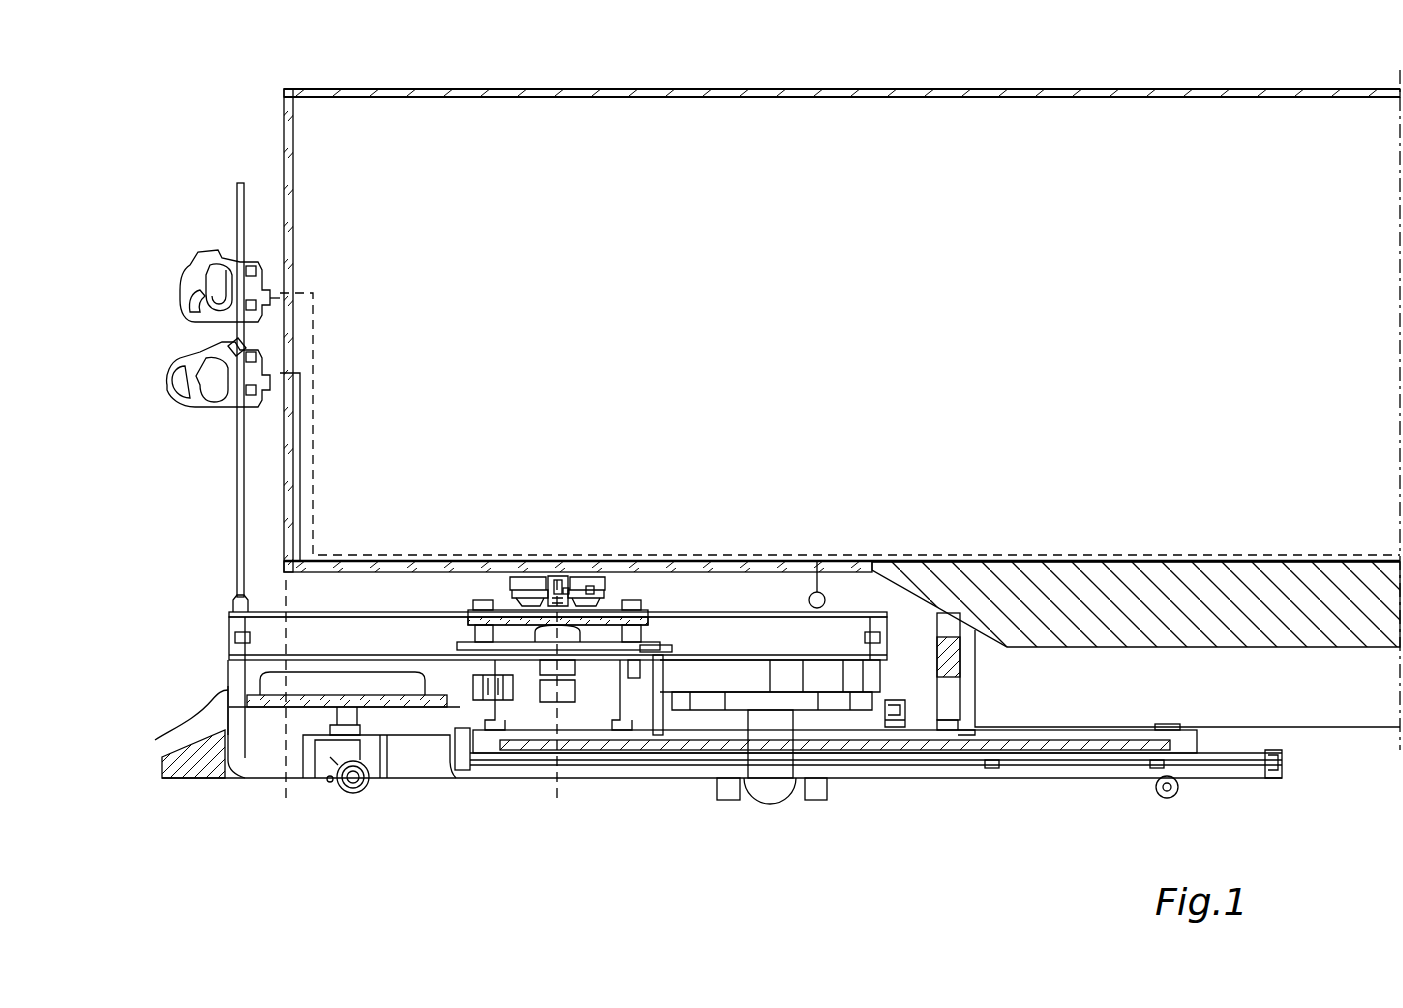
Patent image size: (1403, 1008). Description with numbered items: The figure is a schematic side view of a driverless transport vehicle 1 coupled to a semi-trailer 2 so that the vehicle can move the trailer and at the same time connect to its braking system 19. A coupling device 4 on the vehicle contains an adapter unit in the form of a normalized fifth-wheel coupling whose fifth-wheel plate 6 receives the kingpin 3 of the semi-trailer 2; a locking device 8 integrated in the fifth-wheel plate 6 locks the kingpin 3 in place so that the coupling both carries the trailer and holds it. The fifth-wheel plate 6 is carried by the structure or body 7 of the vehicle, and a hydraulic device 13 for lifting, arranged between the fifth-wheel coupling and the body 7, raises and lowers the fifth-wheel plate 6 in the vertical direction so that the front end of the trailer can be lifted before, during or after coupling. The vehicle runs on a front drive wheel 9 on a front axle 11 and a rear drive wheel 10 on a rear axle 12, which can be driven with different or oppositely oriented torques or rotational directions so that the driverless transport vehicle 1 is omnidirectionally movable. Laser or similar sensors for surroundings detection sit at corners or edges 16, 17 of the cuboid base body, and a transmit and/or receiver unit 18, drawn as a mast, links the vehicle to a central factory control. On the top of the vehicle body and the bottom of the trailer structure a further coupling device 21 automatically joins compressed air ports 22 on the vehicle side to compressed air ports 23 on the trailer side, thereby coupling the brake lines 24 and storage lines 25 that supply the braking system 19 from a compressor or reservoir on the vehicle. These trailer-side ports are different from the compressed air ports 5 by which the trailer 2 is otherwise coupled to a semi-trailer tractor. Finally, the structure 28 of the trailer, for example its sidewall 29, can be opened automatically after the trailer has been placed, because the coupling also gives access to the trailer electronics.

The driverless transport vehicle 1 is at (412, 762).
The semi-trailer 2 is at (1180, 582).
The kingpin 3 is at (562, 590).
The coupling device 4 is at (503, 578).
The compressed air ports 5 is at (182, 295).
The fifth-wheel plate 6 is at (590, 588).
The structure or body 7 is at (692, 760).
The locking device 8 is at (572, 588).
The front drive wheel 9 is at (352, 796).
The rear drive wheel 10 is at (770, 792).
The front axle 11 is at (362, 814).
The rear axle 12 is at (789, 800).
The device for lifting 13 is at (470, 636).
The corner or edge of base body 16 is at (158, 746).
The corner or edge of base body 17 is at (887, 670).
The transmit and/or receiver unit 18 is at (240, 148).
The braking system 19 is at (506, 432).
The coupling device 21 is at (812, 612).
The compressed air ports 22 is at (822, 597).
The compressed air ports 23 is at (816, 577).
The brake lines 24 is at (320, 312).
The storage lines 25 is at (300, 458).
The structure of the trailer 28 is at (1262, 74).
The sidewall 29 is at (1262, 302).